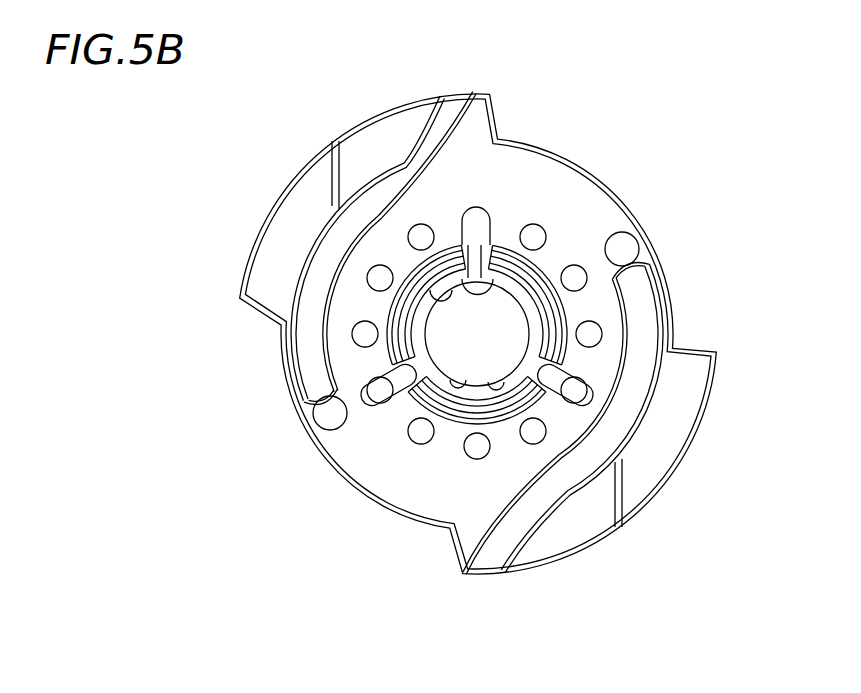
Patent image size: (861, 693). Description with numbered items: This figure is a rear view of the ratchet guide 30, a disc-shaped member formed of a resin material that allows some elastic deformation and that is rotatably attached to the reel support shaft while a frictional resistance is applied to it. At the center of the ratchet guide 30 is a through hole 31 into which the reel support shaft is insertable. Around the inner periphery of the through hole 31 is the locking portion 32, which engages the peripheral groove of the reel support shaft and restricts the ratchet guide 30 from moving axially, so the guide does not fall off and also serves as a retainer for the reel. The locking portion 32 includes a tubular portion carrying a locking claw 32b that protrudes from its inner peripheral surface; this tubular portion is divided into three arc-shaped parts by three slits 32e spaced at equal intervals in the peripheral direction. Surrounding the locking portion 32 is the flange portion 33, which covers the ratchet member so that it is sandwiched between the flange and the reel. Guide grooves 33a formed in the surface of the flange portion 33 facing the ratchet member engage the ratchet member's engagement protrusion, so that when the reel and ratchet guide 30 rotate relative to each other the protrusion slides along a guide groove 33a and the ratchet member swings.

The ratchet guide 30 is at (654, 145).
The through hole 31 is at (482, 336).
The locking portion 32 is at (455, 386).
The locking claw 32b is at (452, 290).
The slit 32e is at (483, 268).
The flange portion 33 is at (700, 428).
The guide groove 33a is at (636, 350).